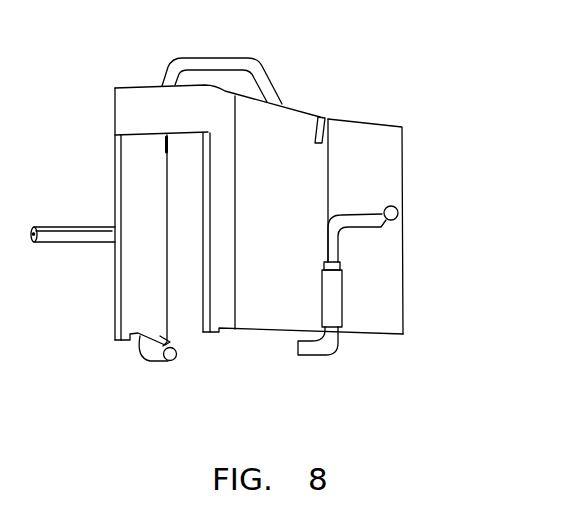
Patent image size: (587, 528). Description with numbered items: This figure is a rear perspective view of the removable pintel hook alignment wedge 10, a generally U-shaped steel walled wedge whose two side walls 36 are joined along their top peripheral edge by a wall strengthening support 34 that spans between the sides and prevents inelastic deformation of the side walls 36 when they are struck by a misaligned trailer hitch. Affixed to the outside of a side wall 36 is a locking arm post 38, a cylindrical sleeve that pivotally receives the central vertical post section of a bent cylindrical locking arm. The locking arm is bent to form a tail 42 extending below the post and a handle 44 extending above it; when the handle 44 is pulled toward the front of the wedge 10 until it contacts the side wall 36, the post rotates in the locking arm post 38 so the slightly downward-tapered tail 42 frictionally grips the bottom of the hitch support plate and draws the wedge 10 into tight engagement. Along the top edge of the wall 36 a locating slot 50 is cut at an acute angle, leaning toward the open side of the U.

The pintel hook alignment wedge 10 is at (137, 388).
The handle 34 is at (213, 57).
The side wall 36 is at (388, 162).
The locking arm post 38 is at (335, 302).
The tail 42 is at (310, 348).
The handle 44 is at (380, 222).
The locating slot 50 is at (323, 116).